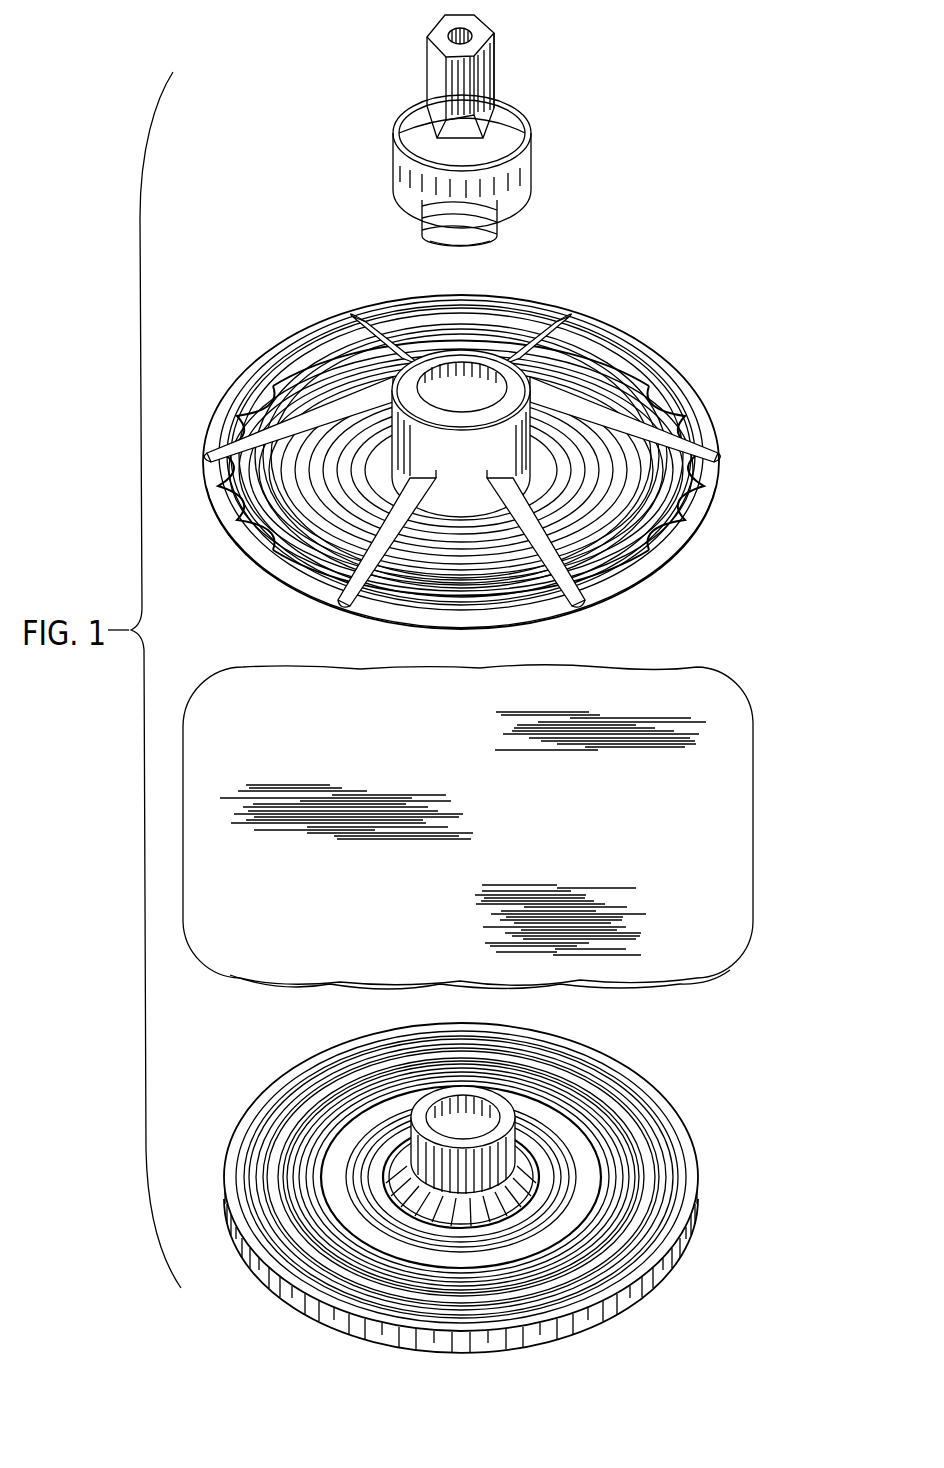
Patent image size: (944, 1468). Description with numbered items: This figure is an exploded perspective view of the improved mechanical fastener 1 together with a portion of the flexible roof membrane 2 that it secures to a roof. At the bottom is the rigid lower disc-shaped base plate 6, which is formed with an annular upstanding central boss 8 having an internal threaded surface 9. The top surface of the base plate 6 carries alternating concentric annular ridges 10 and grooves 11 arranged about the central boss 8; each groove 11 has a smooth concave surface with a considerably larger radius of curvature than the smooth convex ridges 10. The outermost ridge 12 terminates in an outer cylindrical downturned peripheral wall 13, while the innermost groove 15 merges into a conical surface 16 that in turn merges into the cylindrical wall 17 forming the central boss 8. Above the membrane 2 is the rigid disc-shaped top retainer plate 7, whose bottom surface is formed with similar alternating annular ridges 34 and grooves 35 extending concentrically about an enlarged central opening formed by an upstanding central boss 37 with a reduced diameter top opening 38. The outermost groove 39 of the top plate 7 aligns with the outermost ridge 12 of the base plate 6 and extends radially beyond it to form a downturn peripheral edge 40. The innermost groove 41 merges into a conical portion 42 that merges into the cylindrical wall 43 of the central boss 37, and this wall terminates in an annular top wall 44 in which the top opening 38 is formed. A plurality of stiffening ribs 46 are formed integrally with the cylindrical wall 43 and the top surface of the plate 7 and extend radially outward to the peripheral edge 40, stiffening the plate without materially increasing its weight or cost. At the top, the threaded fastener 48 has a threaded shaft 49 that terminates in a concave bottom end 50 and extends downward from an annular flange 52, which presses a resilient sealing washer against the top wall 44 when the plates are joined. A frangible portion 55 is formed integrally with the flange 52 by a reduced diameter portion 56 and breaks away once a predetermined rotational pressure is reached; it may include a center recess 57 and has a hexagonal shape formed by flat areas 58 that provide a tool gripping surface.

The mechanical fastener 1 is at (768, 393).
The roof membrane 2 is at (704, 837).
The base plate 6 is at (702, 1125).
The top retainer plate 7 is at (268, 352).
The central boss 8 is at (458, 1168).
The internal threaded surface 9 is at (482, 1100).
The ridges 10 is at (636, 1205).
The grooves 11 is at (292, 1118).
The outermost ridge 12 is at (332, 1300).
The peripheral wall 13 is at (530, 1335).
The innermost groove 15 is at (523, 1227).
The conical surface 16 is at (530, 1200).
The cylindrical wall 17 is at (404, 1140).
The ridges 34 is at (655, 400).
The grooves 35 is at (308, 520).
The central boss 37 is at (518, 430).
The top opening 38 is at (476, 395).
The outermost groove 39 is at (665, 520).
The downturn peripheral edge 40 is at (646, 585).
The innermost groove 41 is at (440, 535).
The conical portion 42 is at (372, 455).
The cylindrical wall 43 is at (476, 477).
The annular top wall 44 is at (440, 357).
The stiffening ribs 46 is at (553, 332).
The threaded fastener 48 is at (558, 95).
The threaded shaft 49 is at (490, 215).
The concave bottom end 50 is at (443, 240).
The annular flange 52 is at (430, 148).
The frangible portion 55 is at (424, 60).
The reduced diameter portion 56 is at (485, 130).
The center recess 57 is at (472, 32).
The flat areas 58 is at (482, 72).